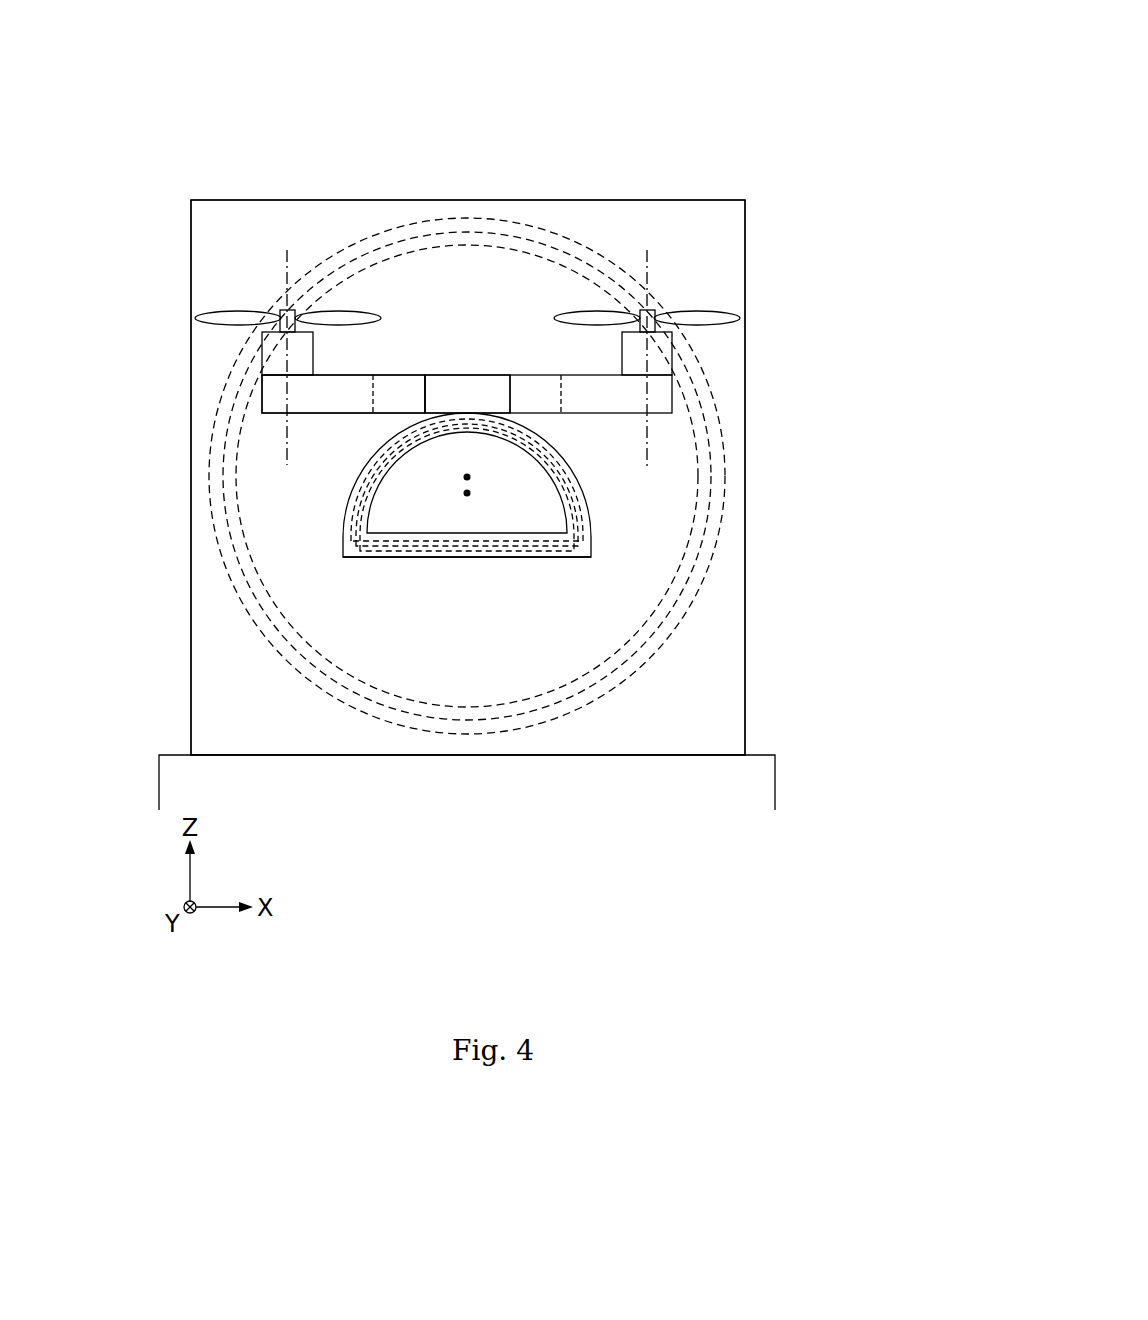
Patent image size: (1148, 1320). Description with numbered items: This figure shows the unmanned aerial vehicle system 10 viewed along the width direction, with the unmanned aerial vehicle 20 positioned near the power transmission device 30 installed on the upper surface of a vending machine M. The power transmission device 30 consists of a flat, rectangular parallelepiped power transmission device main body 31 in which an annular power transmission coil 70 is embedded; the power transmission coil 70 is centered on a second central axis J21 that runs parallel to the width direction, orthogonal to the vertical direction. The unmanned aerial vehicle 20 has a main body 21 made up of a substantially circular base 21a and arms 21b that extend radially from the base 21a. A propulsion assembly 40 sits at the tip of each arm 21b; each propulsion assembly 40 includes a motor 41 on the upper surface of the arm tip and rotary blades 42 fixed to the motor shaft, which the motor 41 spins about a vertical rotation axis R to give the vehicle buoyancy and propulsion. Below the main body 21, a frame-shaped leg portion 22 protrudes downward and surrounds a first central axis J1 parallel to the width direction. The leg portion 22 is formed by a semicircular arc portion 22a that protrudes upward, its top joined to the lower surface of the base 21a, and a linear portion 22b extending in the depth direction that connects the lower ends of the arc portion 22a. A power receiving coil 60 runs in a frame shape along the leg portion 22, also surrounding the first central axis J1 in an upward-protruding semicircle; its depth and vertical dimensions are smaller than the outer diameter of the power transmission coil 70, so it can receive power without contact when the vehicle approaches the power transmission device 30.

The unmanned aerial vehicle system 10 is at (700, 88).
The unmanned aerial vehicle 20 is at (512, 300).
The main body 21 is at (403, 308).
The base 21a is at (468, 390).
The arm 21b is at (350, 390).
The leg portion 22 is at (593, 485).
The arc portion 22a is at (573, 473).
The linear portion 22b is at (588, 547).
The power transmission device 30 is at (602, 197).
The power transmission device main body 31 is at (358, 215).
The propulsion assembly 40 is at (500, 266).
The motor 41 is at (655, 350).
The rotary blades 42 is at (727, 320).
The power receiving coil 60 is at (547, 550).
The power transmission coil 70 is at (597, 253).
The rotation axis R is at (287, 250).
The vending machine M is at (750, 780).
The first central axis J1 is at (467, 493).
The second central axis J21 is at (467, 477).